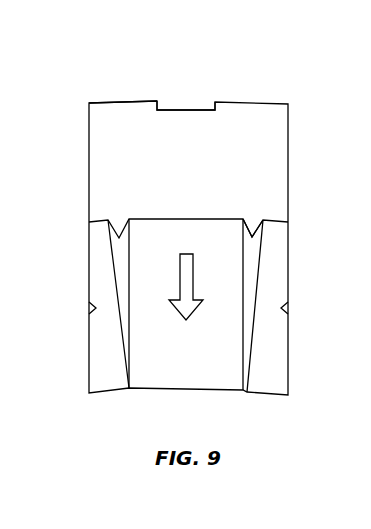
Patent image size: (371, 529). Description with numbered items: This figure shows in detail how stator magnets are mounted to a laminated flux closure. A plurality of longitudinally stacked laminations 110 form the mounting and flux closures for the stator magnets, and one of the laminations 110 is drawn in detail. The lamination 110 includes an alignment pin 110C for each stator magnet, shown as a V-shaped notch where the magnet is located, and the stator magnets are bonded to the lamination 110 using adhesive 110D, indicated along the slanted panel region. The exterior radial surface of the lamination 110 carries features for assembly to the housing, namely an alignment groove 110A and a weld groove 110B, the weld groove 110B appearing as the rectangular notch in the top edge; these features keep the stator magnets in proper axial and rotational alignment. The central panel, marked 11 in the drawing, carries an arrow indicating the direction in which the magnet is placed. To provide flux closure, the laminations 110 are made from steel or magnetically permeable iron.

The lamination 110 is at (108, 125).
The alignment groove 110A is at (122, 106).
The weld groove 110B is at (167, 110).
The alignment pin 110C is at (252, 237).
The adhesive 110D is at (252, 280).
The central panel 11 is at (183, 372).